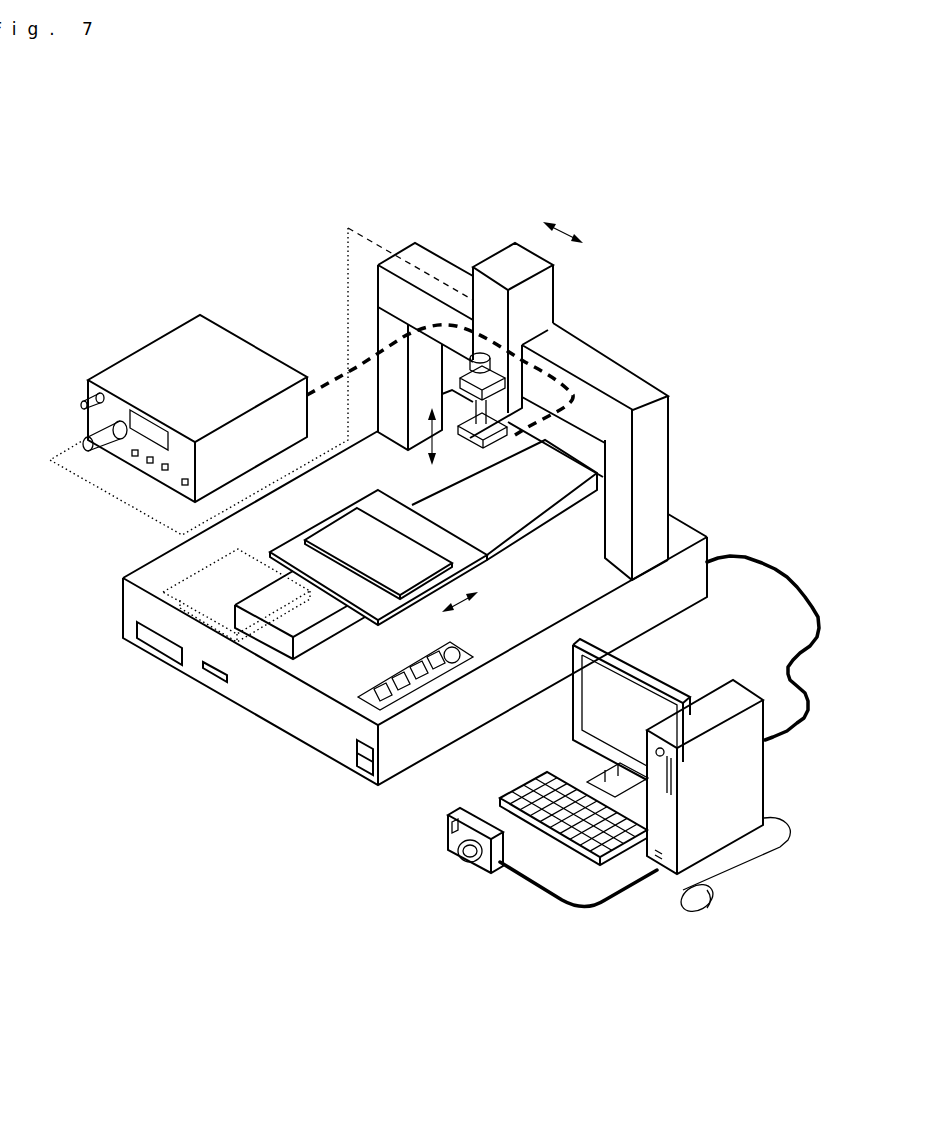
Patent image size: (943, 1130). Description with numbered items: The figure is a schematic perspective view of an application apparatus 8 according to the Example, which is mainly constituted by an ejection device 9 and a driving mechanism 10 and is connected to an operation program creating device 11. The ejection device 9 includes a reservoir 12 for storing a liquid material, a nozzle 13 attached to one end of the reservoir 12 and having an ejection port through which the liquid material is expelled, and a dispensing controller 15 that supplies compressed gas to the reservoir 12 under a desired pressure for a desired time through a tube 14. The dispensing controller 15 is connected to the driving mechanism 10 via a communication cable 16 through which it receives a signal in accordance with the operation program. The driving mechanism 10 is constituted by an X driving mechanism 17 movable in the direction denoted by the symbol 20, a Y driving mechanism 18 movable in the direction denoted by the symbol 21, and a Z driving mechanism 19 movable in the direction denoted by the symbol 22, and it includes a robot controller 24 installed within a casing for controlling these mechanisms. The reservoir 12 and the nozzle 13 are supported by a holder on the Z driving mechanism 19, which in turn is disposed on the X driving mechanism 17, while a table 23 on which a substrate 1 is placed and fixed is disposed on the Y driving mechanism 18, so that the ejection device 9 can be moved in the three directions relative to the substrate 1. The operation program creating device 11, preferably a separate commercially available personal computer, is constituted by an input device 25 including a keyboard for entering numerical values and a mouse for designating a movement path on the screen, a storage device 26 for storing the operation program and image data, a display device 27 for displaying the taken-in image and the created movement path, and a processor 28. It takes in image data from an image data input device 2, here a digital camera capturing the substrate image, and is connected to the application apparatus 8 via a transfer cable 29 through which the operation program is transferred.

The substrate 1 is at (400, 572).
The image data input device 2 is at (452, 857).
The application apparatus 8 is at (273, 850).
The ejection device 9 is at (200, 243).
The driving mechanism 10 is at (680, 238).
The operation program creating device 11 is at (636, 985).
The reservoir 12 is at (432, 407).
The nozzle 13 is at (637, 492).
The tube 14 is at (350, 243).
The dispensing controller 15 is at (185, 345).
The communication cable 16 is at (340, 373).
The X driving mechanism 17 is at (580, 357).
The Y driving mechanism 18 is at (575, 410).
The Z driving mechanism 19 is at (533, 312).
The X direction symbol 20 is at (562, 230).
The Y direction symbol 21 is at (622, 585).
The Z direction symbol 22 is at (393, 417).
The table 23 is at (347, 585).
The robot controller 24 is at (178, 658).
The input device 25 is at (675, 905).
The storage device 26 is at (718, 845).
The display device 27 is at (630, 698).
The processor 28 is at (717, 807).
The transfer cable 29 is at (757, 562).